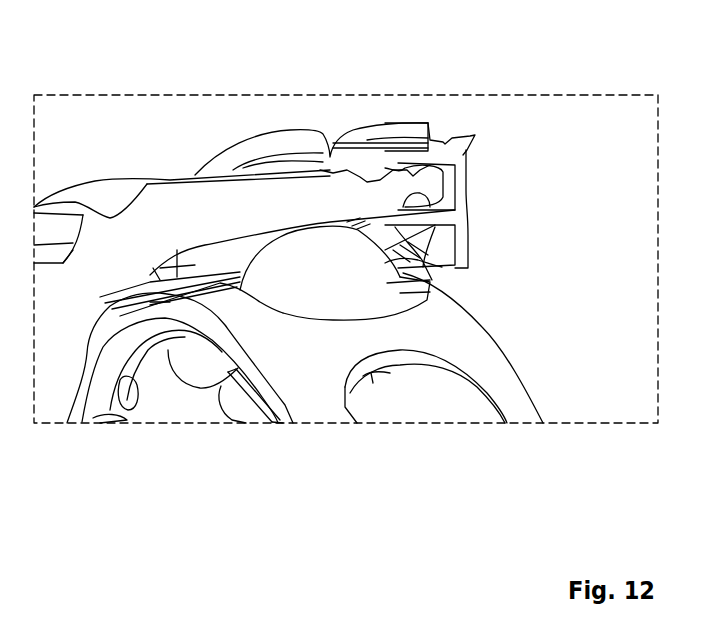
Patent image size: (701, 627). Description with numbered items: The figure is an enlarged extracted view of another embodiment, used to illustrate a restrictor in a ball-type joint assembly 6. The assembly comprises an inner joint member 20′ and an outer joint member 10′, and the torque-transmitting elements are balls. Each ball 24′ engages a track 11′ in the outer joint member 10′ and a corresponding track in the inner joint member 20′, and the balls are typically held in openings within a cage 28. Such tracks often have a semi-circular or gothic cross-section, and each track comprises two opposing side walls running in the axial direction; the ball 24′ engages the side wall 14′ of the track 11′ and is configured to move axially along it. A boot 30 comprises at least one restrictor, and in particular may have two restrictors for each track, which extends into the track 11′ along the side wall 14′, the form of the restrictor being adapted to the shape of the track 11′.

The ball-type joint assembly 6 is at (233, 121).
The outer joint member 10′ is at (178, 192).
The side wall 14′ is at (241, 253).
The track 11′ is at (240, 255).
The boot 30 is at (455, 153).
The cage 28 is at (497, 360).
The ball 24′ is at (355, 297).
The inner joint member 20′ is at (162, 410).